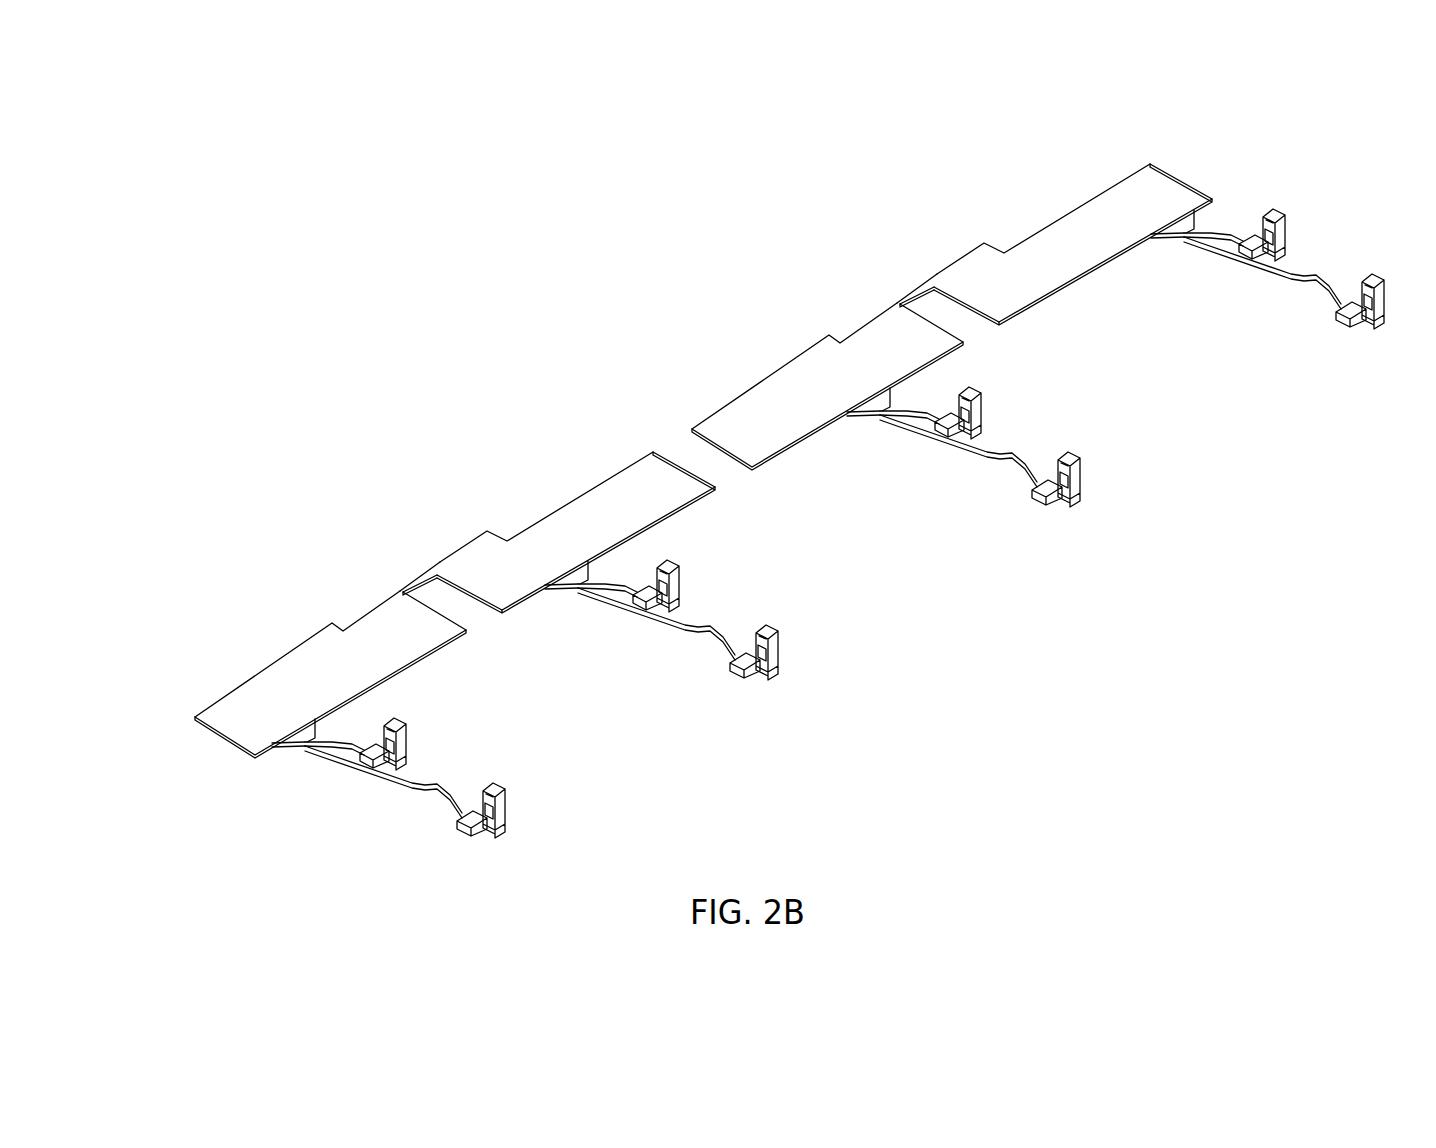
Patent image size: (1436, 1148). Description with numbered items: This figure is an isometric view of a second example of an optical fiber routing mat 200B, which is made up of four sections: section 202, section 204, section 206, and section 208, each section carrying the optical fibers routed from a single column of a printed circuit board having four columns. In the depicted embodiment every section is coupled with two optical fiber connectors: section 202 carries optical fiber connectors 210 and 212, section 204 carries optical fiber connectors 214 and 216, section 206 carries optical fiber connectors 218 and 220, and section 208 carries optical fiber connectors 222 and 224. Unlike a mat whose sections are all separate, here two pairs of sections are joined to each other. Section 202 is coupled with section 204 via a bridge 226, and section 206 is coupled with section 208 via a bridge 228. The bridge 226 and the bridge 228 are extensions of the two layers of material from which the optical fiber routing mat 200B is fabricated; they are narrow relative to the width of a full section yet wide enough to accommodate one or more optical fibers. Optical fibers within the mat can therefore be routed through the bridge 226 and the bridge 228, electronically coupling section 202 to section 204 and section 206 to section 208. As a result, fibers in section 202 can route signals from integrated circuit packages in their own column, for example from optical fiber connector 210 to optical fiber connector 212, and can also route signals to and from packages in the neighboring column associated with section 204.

The optical fiber routing mat 200B is at (442, 277).
The section 202 is at (247, 684).
The section 204 is at (622, 467).
The section 206 is at (742, 398).
The section 208 is at (1112, 186).
The optical fiber connector 210 is at (404, 730).
The optical fiber connector 212 is at (504, 796).
The optical fiber connector 214 is at (677, 570).
The optical fiber connector 216 is at (779, 636).
The optical fiber connector 218 is at (983, 395).
The optical fiber connector 220 is at (1081, 458).
The optical fiber connector 222 is at (1287, 218).
The optical fiber connector 224 is at (1363, 293).
The bridge 226 is at (412, 573).
The bridge 228 is at (908, 288).